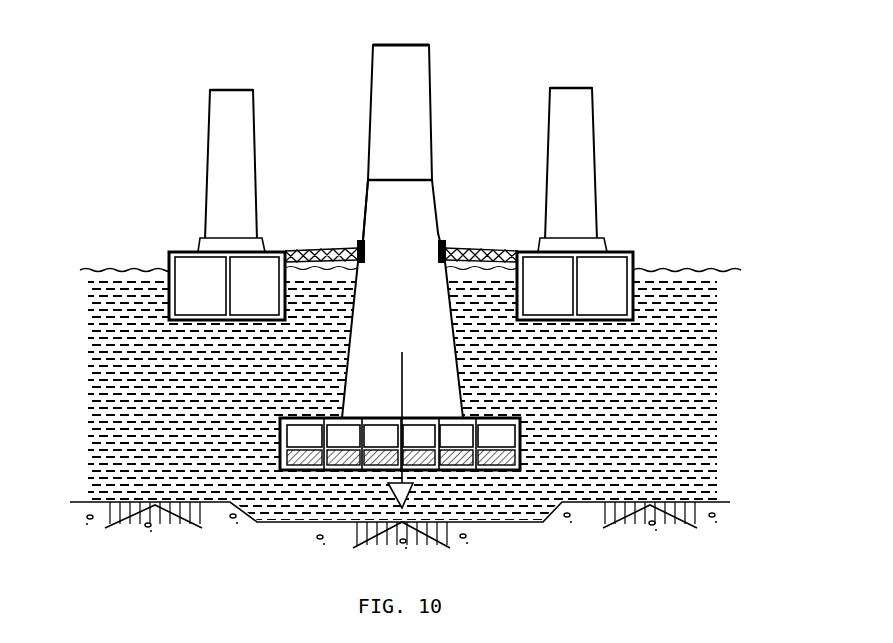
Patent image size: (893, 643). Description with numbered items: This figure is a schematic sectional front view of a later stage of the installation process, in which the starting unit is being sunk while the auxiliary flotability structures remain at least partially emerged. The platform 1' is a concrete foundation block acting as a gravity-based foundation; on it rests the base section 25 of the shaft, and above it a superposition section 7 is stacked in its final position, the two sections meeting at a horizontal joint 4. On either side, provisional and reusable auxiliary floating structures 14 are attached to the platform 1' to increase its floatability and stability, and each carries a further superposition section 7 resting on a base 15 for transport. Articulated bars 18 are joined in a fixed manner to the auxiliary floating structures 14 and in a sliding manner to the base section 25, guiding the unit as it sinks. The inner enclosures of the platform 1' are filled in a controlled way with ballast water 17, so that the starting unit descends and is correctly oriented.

The superposition section 7 is at (210, 140).
The horizontal joint 4 is at (392, 179).
The base section 25 is at (364, 216).
The base 15 is at (217, 246).
The auxiliary floating structure 14 is at (197, 320).
The articulated bar 18 is at (465, 247).
The platform 1' is at (424, 430).
The water 17 is at (420, 453).